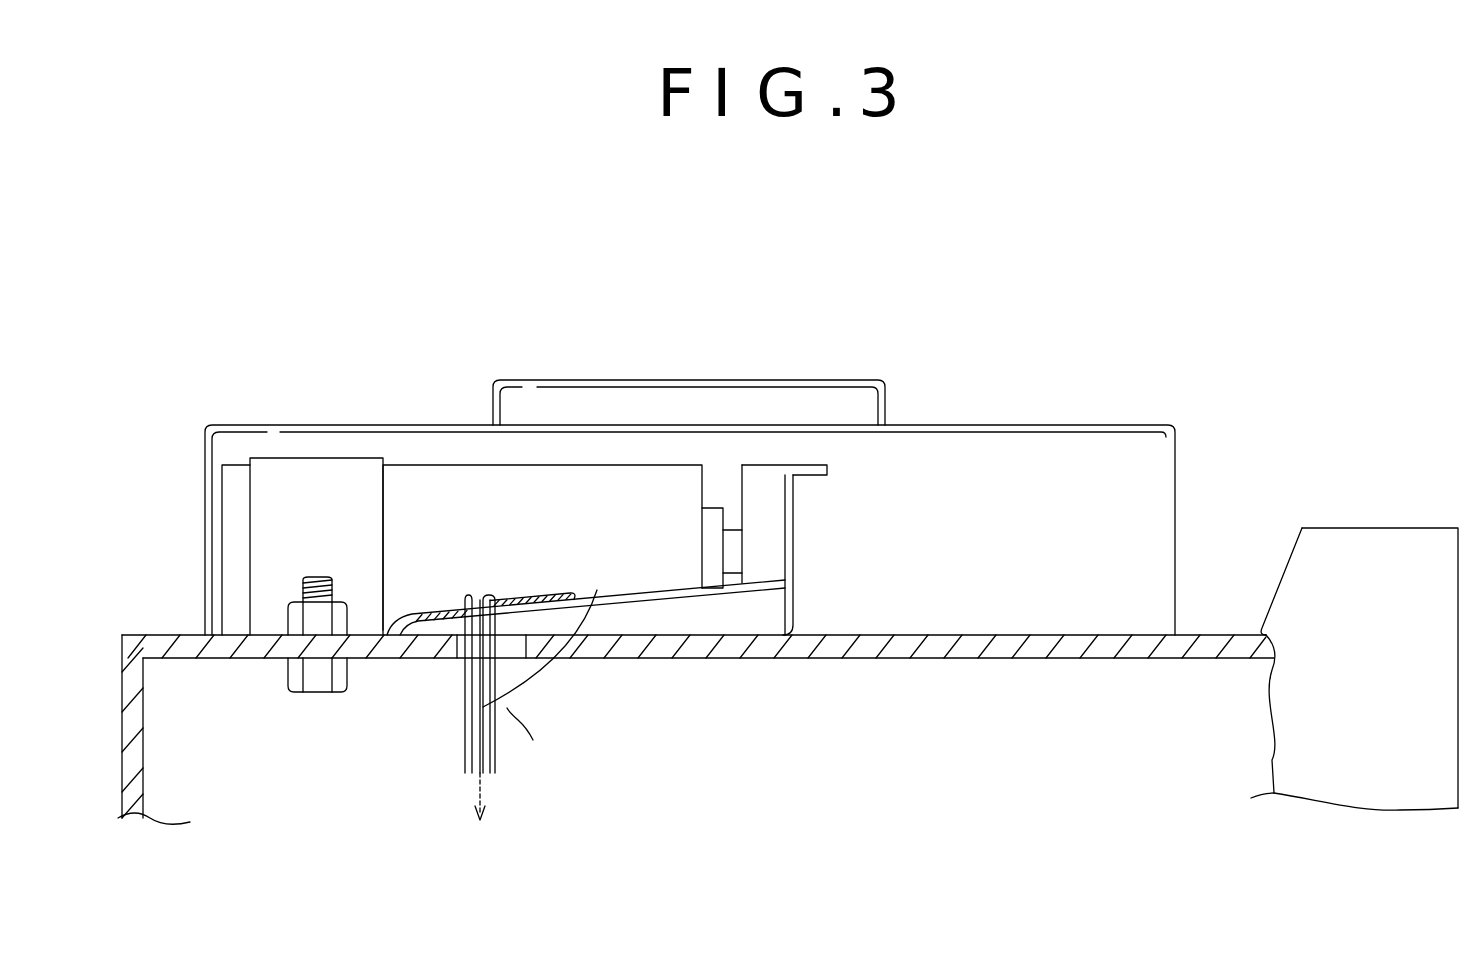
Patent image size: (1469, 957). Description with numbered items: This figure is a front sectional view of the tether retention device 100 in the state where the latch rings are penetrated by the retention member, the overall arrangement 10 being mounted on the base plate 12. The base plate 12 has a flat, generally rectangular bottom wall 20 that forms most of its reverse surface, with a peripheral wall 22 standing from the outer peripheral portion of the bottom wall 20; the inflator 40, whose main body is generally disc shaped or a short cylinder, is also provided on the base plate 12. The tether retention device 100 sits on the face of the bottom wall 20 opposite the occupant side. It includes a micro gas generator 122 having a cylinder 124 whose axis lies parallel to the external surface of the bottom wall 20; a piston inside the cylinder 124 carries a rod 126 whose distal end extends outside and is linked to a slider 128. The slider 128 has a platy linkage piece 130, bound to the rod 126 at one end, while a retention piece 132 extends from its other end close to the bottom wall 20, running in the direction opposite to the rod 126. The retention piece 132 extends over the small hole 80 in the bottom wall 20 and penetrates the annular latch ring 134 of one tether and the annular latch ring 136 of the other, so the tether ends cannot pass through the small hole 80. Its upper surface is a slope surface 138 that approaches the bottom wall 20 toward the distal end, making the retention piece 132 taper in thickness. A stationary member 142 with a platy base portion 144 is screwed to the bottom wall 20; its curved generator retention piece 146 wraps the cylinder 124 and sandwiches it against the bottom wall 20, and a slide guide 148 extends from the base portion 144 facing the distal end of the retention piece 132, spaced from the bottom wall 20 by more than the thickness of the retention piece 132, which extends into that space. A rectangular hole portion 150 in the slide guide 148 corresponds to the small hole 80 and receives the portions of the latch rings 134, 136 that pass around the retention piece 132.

The connection structure 10 is at (1097, 311).
The base plate 12 is at (1372, 520).
The bottom wall 20 is at (1199, 630).
The peripheral wall 22 is at (144, 770).
The inflator 40 is at (1040, 423).
The small hole 80 is at (527, 658).
The tether retention device 100 is at (880, 549).
The micro gas generator 122 is at (660, 572).
The cylinder 124 is at (456, 478).
The rod 126 is at (731, 530).
The slider 128 is at (805, 514).
The linkage piece 130 is at (783, 463).
The retention piece 132 is at (795, 609).
The latch ring 134 is at (463, 738).
The latch ring 136 is at (497, 758).
The slope surface 138 is at (612, 598).
The stationary member 142 is at (392, 540).
The base portion 144 is at (268, 628).
The generator retention piece 146 is at (321, 473).
The slide guide 148 is at (565, 590).
The hole portion 150 is at (523, 594).